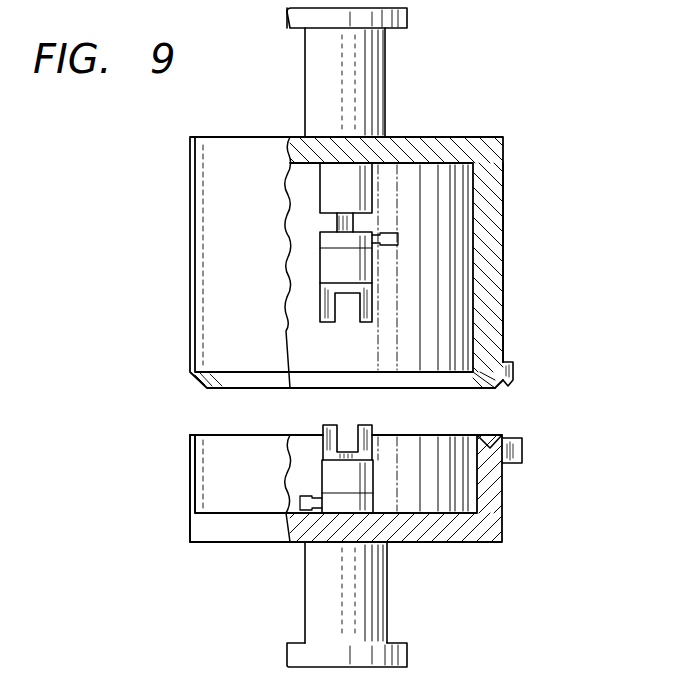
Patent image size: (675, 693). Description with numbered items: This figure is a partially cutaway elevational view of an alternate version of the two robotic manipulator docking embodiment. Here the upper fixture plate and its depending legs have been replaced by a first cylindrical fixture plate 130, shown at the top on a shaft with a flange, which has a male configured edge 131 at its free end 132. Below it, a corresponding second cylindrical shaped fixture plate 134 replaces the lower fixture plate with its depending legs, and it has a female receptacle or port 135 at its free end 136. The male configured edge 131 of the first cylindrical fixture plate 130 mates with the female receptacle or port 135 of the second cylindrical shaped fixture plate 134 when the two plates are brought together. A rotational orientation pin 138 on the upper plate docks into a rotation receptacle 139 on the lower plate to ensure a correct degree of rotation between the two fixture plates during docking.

The first cylindrical fixture plate 130 is at (395, 272).
The free end 132 is at (503, 345).
The rotational orientation pin 138 is at (513, 368).
The male configured edge 131 is at (507, 388).
The female receptacle or port 135 is at (490, 434).
The rotation receptacle 139 is at (518, 456).
The second cylindrical shaped fixture plate 134 is at (346, 476).
The free end 136 is at (207, 471).